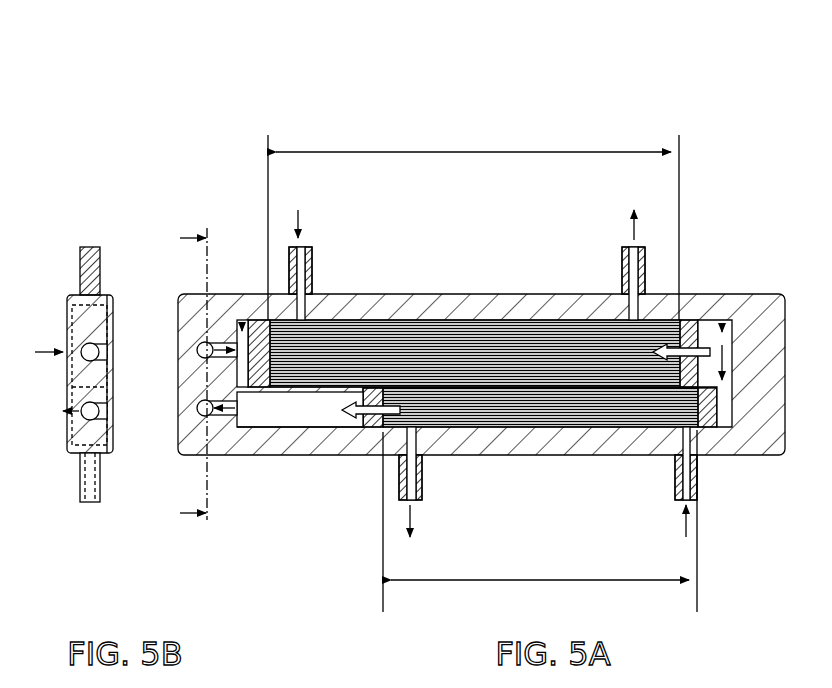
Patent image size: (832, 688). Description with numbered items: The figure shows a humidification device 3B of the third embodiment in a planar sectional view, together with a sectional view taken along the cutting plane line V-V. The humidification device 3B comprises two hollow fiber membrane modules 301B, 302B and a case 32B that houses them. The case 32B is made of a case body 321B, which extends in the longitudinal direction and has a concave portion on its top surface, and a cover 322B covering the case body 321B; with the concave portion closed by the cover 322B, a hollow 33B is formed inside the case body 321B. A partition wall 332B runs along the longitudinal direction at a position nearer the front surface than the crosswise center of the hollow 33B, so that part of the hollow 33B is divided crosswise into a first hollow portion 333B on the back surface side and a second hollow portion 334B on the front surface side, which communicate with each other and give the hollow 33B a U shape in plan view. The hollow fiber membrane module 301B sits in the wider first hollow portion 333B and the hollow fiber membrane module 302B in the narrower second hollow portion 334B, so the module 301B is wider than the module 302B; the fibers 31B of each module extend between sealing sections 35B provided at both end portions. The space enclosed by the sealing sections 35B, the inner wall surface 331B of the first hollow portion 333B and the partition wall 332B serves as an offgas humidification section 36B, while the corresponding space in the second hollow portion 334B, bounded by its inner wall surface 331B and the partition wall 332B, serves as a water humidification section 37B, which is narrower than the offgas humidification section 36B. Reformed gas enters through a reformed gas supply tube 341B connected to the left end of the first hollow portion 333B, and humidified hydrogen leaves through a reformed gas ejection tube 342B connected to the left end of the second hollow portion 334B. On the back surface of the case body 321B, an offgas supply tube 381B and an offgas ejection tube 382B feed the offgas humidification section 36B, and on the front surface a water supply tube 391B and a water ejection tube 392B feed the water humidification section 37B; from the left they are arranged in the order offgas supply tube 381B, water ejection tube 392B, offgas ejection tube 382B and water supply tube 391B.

In FIG. 5A, the humidification device 3B is at (490, 74).
In FIG. 5A, the hollow fiber membrane bundle 31B is at (487, 337).
In FIG. 5B, the case 32B is at (115, 455).
In FIG. 5B, the case body 321B is at (100, 455).
In FIG. 5B, the cover 322B is at (112, 455).
In FIG. 5A, the hollow 33B is at (252, 328).
In FIG. 5B, the hollow 33B is at (80, 449).
In FIG. 5A, the inner wall surface 331B is at (721, 322).
In FIG. 5A, the partition wall 332B is at (316, 393).
In FIG. 5A, the first hollow portion 333B is at (242, 318).
In FIG. 5A, the second hollow portion 334B is at (266, 428).
In FIG. 5A, the reformed gas supply tube 341B is at (203, 343).
In FIG. 5B, the reformed gas supply tube 341B is at (87, 345).
In FIG. 5A, the reformed gas ejection tube 342B is at (203, 416).
In FIG. 5B, the reformed gas ejection tube 342B is at (76, 414).
In FIG. 5A, the sealing sections 35B is at (336, 306).
In FIG. 5A, the offgas humidification section 36B is at (473, 224).
In FIG. 5A, the water humidification section 37B is at (540, 521).
In FIG. 5A, the hollow fiber membrane module 301B is at (580, 235).
In FIG. 5A, the hollow fiber membrane module 302B is at (623, 495).
In FIG. 5A, the offgas supply tube 381B is at (300, 250).
In FIG. 5B, the offgas supply tube 381B is at (92, 247).
In FIG. 5A, the offgas ejection tube 382B is at (622, 252).
In FIG. 5A, the water supply tube 391B is at (684, 502).
In FIG. 5A, the water ejection tube 392B is at (412, 502).
In FIG. 5B, the water ejection tube 392B is at (93, 502).